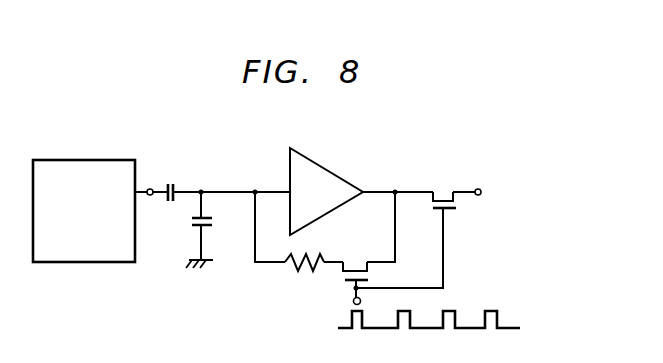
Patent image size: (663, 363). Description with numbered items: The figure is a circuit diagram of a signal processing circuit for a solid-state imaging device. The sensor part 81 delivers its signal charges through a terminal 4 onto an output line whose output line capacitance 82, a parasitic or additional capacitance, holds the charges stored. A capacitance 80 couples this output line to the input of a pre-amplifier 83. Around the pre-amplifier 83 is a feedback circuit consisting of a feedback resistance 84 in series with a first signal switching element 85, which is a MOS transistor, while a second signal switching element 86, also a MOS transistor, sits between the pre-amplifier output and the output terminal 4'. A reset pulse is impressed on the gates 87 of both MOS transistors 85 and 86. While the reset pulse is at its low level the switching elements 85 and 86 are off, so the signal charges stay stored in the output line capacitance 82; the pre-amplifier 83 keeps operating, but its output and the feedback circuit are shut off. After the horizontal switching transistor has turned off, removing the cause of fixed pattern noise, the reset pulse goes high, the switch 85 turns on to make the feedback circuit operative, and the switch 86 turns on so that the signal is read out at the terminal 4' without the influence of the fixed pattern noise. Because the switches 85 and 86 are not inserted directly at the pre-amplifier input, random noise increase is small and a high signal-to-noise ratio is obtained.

The sensor part 81 is at (88, 262).
The output terminal 4 is at (148, 172).
The capacitance 80 is at (172, 182).
The output line capacitance 82 is at (214, 222).
The pre-amplifier 83 is at (335, 173).
The feedback resistance 84 is at (297, 271).
The signal switching element 85 is at (355, 268).
The signal switching element 86 is at (443, 192).
The output terminal 4' is at (498, 175).
The gates 87 is at (361, 300).